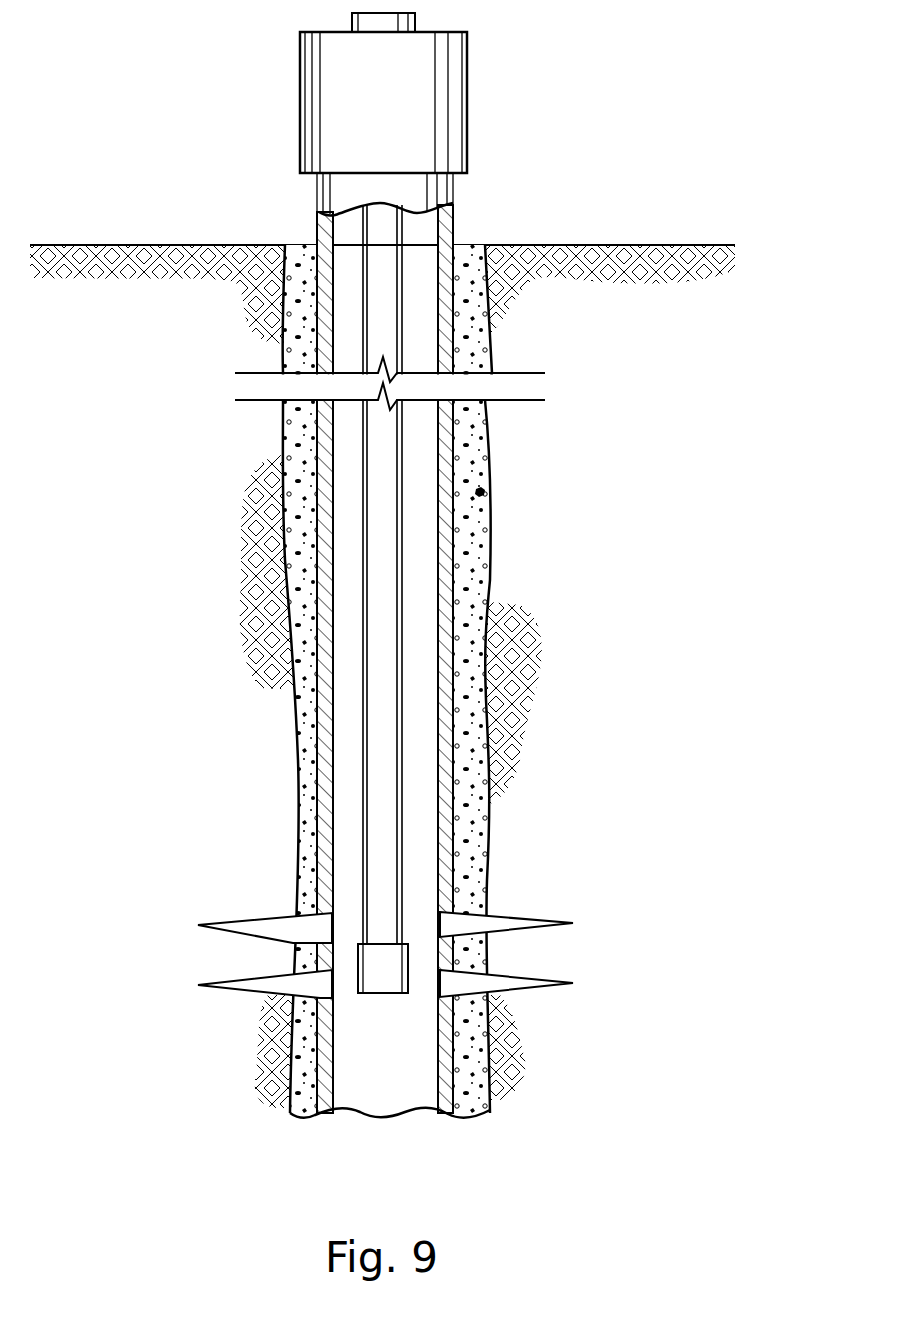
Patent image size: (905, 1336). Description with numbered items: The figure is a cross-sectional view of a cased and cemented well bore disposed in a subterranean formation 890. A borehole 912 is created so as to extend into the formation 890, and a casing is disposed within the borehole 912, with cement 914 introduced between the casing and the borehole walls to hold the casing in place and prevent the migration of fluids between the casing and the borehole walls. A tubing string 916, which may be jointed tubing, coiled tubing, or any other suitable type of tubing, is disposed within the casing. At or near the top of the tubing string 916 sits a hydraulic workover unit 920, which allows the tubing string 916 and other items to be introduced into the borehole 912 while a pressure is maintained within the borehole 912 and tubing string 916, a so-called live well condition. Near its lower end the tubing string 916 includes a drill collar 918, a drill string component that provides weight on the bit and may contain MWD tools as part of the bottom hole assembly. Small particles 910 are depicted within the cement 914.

The subterranean formation 890 is at (394, 565).
The sensor embedded in cement 910 is at (490, 507).
The borehole 912 is at (427, 558).
The cement 914 is at (468, 677).
The tubing string 916 is at (402, 450).
The drill collar 918 is at (407, 970).
The hydraulic workover unit 920 is at (468, 100).